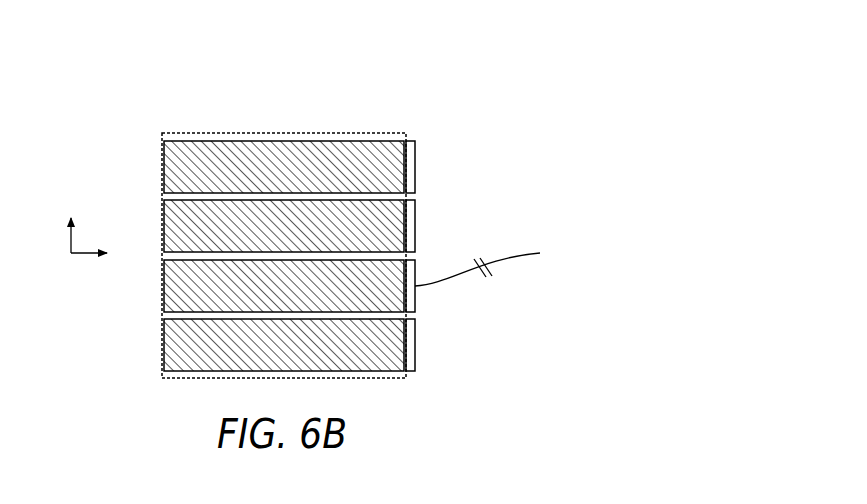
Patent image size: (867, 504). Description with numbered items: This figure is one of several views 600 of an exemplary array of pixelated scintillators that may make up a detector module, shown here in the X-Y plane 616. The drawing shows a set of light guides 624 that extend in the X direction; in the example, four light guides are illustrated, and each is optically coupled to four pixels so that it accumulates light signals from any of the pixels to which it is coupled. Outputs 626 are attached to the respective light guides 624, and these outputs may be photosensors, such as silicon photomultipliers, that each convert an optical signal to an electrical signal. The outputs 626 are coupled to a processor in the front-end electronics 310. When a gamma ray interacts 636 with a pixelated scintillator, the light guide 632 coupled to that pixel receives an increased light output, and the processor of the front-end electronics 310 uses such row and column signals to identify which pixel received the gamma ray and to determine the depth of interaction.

The views of an exemplary array of pixelated scintillators 600 is at (415, 52).
The light guides 624 is at (316, 239).
The outputs 626 is at (415, 218).
The light guide 632 is at (397, 352).
The gamma ray interaction 636 is at (375, 348).
The X-Y plane 616 is at (83, 255).
The front-end electronics 310 is at (572, 259).